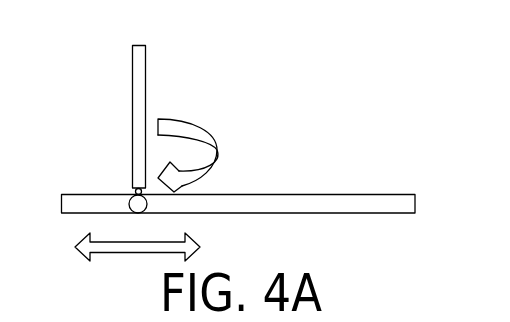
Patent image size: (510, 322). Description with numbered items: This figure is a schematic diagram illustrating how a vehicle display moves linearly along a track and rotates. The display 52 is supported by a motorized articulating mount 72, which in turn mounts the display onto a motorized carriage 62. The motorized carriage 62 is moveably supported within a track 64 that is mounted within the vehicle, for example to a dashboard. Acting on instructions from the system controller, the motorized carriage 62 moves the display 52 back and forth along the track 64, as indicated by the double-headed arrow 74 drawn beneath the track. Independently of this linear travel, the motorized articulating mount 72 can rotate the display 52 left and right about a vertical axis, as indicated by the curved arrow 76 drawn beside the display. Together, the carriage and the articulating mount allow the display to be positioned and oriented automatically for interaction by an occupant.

The display 52 is at (134, 85).
The motorized carriage 62 is at (131, 207).
The track 64 is at (303, 205).
The motorized articulating mount 72 is at (135, 191).
The arrow 74 is at (134, 247).
The arrow 76 is at (188, 130).